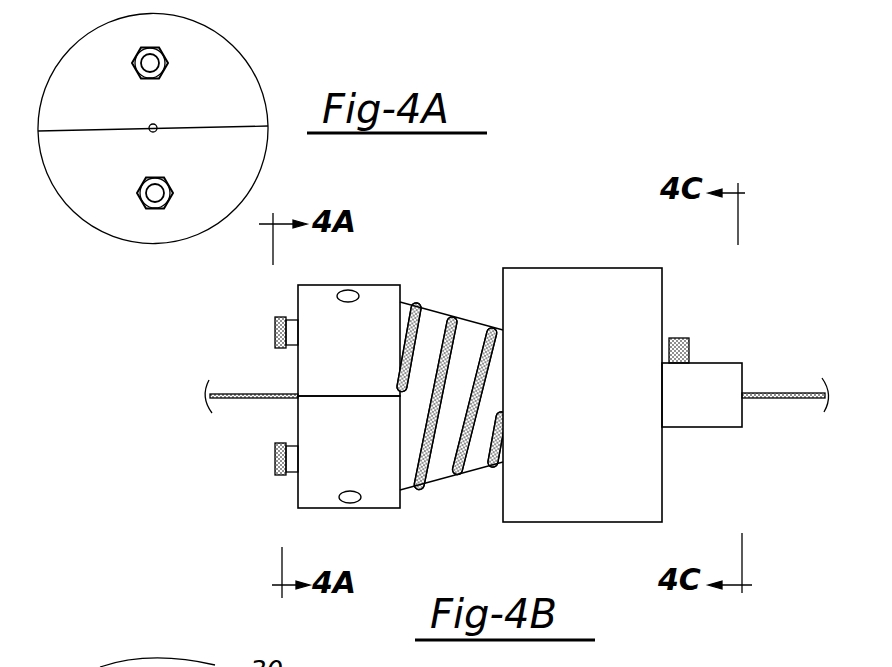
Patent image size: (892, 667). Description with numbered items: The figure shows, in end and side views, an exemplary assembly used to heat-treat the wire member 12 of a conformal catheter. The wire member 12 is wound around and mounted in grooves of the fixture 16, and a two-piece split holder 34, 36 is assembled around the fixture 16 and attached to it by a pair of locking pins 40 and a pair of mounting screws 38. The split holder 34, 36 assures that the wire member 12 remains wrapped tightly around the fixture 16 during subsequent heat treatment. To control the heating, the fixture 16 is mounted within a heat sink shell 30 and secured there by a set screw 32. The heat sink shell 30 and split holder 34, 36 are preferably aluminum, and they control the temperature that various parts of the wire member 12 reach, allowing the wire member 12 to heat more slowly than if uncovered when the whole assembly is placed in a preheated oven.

In FIG. 4B, the wire member 12 is at (224, 393).
In FIG. 4B, the fixture 16 is at (433, 477).
In FIG. 4B, the heat sink shell 30 is at (650, 467).
In FIG. 4B, the set screw 32 is at (679, 338).
In FIG. 4A, the split holder 34 is at (240, 82).
In FIG. 4B, the split holder 34 is at (300, 366).
In FIG. 4A, the split holder 36 is at (190, 220).
In FIG. 4B, the split holder 36 is at (300, 413).
In FIG. 4A, the mounting screws 38 is at (163, 77).
In FIG. 4B, the mounting screws 38 is at (272, 332).
In FIG. 4B, the locking pins 40 is at (343, 283).